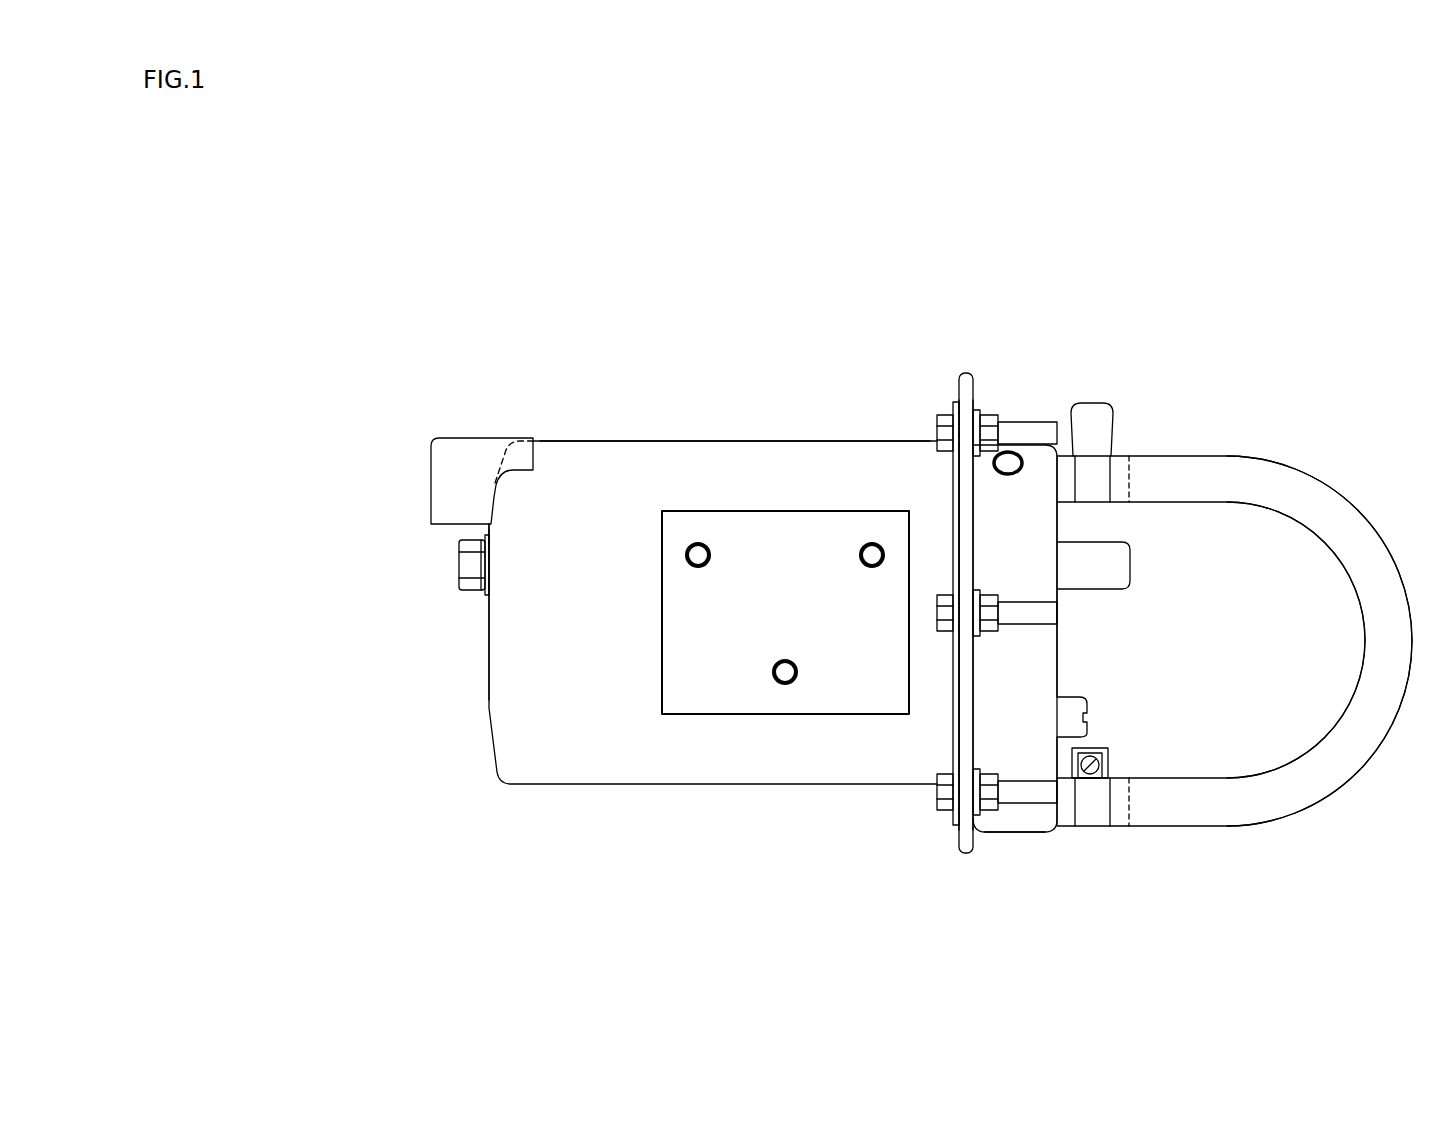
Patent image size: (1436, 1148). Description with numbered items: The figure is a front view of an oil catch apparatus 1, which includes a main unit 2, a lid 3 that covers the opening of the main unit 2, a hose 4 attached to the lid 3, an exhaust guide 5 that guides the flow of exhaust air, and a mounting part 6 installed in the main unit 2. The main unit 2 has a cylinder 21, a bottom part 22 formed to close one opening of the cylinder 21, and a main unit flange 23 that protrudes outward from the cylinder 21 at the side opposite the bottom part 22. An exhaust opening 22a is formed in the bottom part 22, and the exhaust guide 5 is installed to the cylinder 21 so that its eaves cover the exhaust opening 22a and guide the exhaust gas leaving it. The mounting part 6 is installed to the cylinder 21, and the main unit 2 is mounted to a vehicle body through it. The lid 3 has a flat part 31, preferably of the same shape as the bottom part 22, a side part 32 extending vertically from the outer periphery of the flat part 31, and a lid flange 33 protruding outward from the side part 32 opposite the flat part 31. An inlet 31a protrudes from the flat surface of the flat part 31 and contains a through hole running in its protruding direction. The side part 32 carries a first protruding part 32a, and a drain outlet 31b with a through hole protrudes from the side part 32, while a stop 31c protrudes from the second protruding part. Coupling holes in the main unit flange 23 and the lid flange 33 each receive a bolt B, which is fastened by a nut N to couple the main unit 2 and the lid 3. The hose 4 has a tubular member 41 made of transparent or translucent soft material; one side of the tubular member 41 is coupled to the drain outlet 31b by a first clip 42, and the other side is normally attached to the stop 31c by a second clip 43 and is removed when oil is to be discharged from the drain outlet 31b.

The oil catch apparatus 1 is at (1140, 360).
The main unit 2 is at (845, 442).
The cylinder 21 is at (758, 470).
The bottom part 22 is at (488, 664).
The exhaust opening 22a is at (488, 504).
The exhaust guide 5 is at (448, 452).
The mounting part 6 is at (737, 693).
The lid 3 is at (1015, 445).
The main unit flange 23 is at (953, 823).
The lid flange 33 is at (968, 690).
The side part 32 is at (1030, 657).
The first protruding part 32a is at (1020, 820).
The flat part 31 is at (1058, 628).
The inlet 31a is at (1117, 570).
The drain outlet 31b is at (1120, 807).
The stop 31c is at (1119, 463).
The hose 4 is at (1243, 457).
The tubular member 41 is at (1303, 497).
The first clip 42 is at (1102, 748).
The second clip 43 is at (1102, 417).
The bolt B is at (943, 802).
The nut N is at (1042, 795).